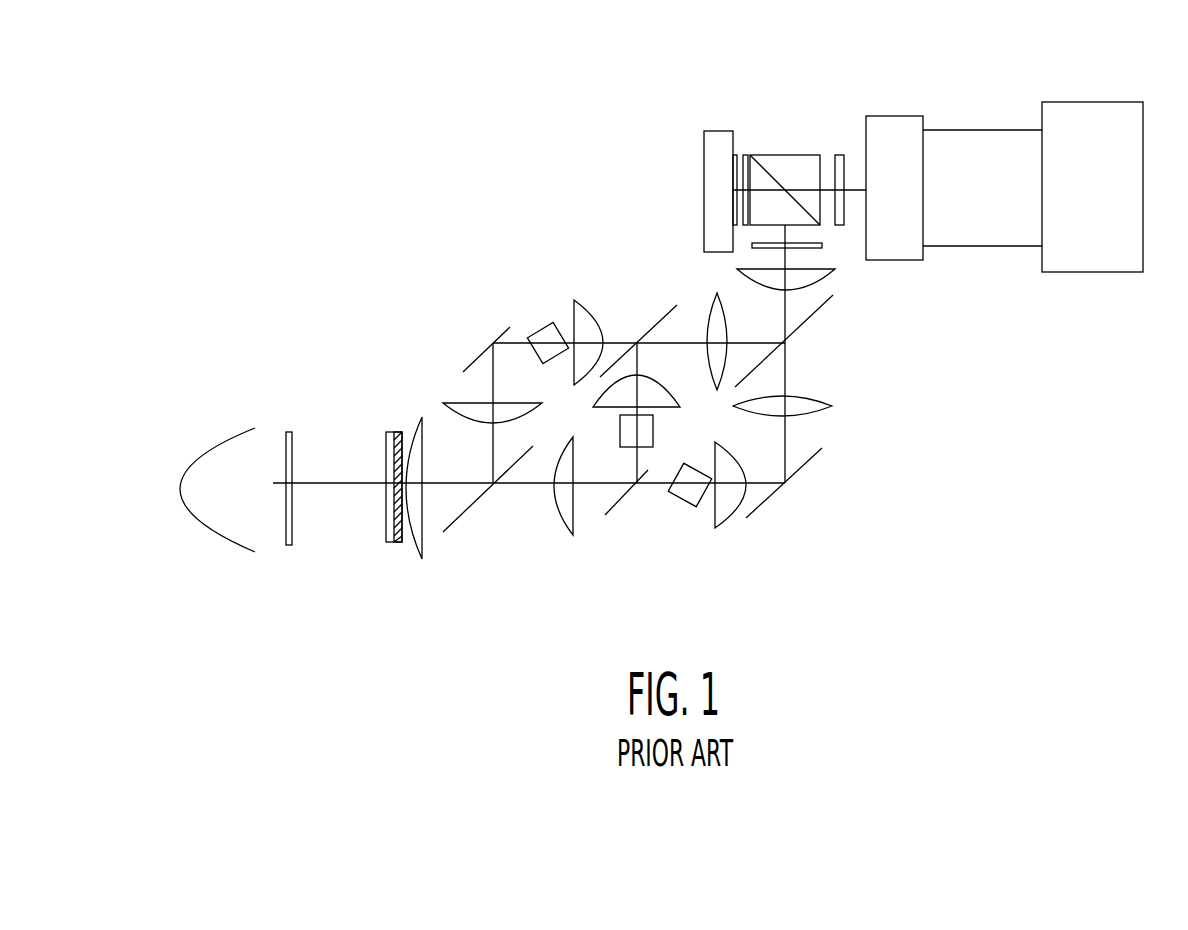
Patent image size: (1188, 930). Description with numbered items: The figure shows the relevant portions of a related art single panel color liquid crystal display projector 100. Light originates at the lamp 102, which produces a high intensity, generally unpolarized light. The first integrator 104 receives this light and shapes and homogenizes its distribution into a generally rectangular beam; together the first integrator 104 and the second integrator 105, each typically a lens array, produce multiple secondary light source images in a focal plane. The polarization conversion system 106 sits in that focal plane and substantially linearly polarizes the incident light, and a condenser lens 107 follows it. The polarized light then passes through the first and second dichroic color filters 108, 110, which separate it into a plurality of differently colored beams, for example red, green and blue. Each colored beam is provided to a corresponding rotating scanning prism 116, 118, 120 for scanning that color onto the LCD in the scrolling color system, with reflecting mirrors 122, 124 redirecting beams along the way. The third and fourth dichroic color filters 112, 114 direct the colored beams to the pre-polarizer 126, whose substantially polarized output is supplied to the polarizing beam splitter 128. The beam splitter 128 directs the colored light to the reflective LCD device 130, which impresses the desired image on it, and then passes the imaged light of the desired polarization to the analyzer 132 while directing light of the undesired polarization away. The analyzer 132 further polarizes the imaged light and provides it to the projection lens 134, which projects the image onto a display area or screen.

The liquid crystal display (LCD) projector 100 is at (280, 99).
The lamp 102 is at (185, 473).
The first integrator 104 is at (287, 437).
The second integrator 105 is at (388, 432).
The polarization conversion system (PCS) 106 is at (395, 430).
The condenser lens 107 is at (417, 548).
The first dichroic color filter 108 is at (477, 510).
The second dichroic color filter 110 is at (627, 497).
The third dichroic color filter 112 is at (638, 337).
The fourth dichroic color filter 114 is at (793, 333).
The first scanning prism 116 is at (553, 322).
The second scanning prism 118 is at (620, 447).
The third scanning prism 120 is at (690, 510).
The reflecting mirror 122 is at (475, 355).
The reflecting mirror 124 is at (795, 477).
The pre-polarizer 126 is at (823, 247).
The polarizing beam splitter 128 is at (775, 153).
The LCD device 130 is at (702, 138).
The analyzer 132 is at (842, 153).
The projection lens 134 is at (917, 117).